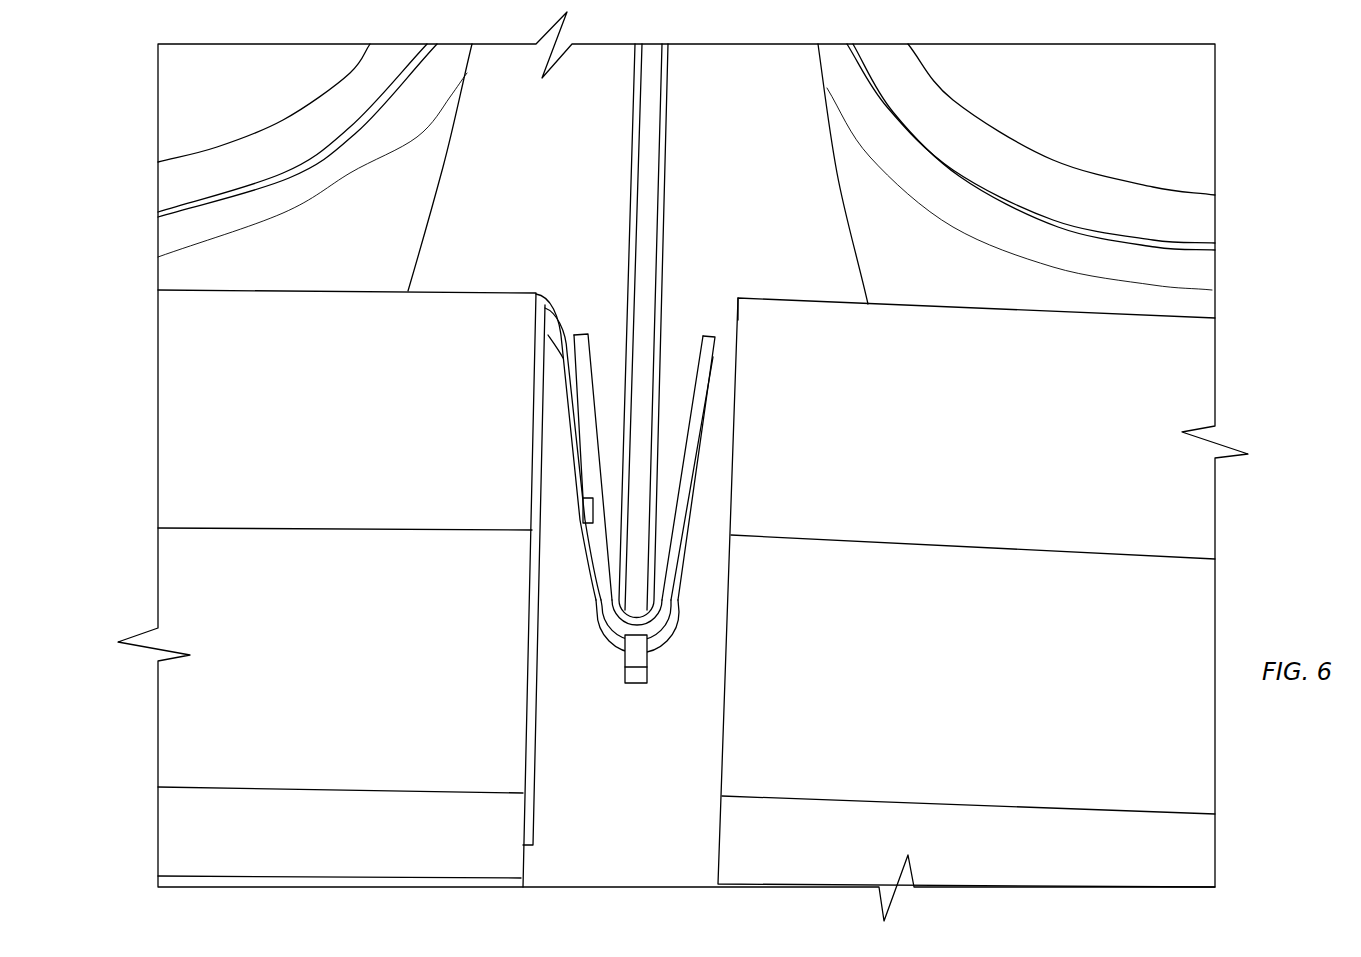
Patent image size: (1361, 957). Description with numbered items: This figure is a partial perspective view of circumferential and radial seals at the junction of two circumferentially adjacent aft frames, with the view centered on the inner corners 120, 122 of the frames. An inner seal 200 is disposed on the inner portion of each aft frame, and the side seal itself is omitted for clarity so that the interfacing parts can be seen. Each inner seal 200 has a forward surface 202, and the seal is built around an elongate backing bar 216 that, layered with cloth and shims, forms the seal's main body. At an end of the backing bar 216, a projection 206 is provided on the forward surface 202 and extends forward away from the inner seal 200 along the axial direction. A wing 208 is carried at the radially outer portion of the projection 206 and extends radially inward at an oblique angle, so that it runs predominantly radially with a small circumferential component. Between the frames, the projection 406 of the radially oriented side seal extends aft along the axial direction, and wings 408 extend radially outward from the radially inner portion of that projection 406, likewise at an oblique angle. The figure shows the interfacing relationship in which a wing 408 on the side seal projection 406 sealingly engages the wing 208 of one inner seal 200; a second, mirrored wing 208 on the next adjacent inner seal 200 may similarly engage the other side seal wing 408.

The inner corner 120 is at (247, 93).
The inner corner 122 is at (965, 92).
The inner seal 200 is at (185, 827).
The forward surface 202 is at (686, 588).
The projection 206 is at (537, 480).
The wing 208 is at (563, 318).
The backing bar 216 is at (265, 547).
The projection 406 is at (652, 128).
The wing 408 is at (697, 480).